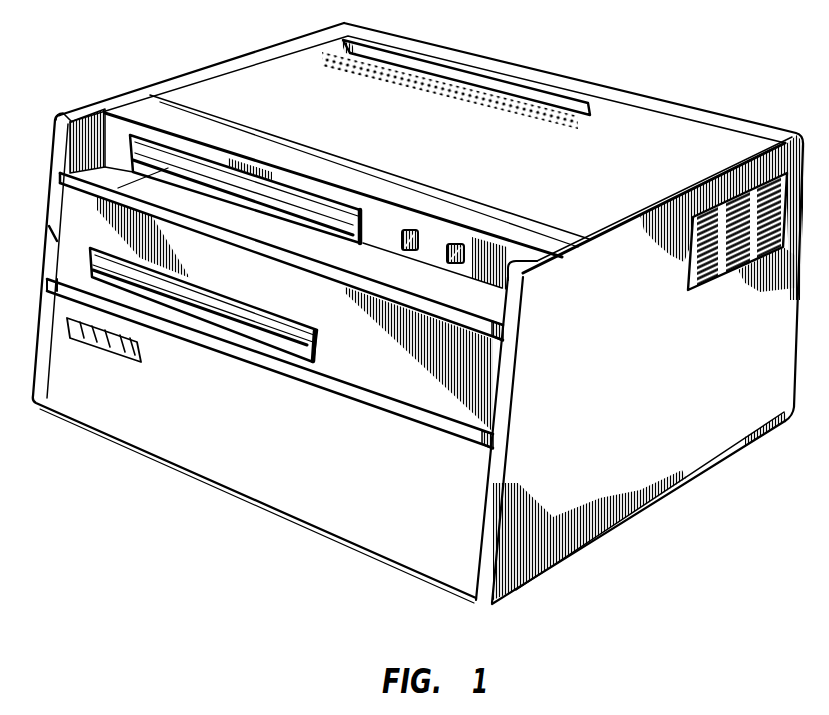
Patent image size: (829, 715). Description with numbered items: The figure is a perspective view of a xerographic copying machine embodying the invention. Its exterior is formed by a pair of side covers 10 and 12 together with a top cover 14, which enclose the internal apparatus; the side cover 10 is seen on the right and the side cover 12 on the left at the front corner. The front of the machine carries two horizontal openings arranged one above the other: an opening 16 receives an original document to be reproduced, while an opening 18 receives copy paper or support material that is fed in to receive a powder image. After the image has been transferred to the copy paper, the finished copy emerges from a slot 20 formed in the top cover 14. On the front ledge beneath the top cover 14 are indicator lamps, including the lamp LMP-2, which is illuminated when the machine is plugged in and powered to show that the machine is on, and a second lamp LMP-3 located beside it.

The side cover 10 is at (500, 366).
The side cover 12 is at (83, 105).
The top cover 14 is at (248, 64).
The opening 16 is at (261, 351).
The opening 18 is at (311, 238).
The slot 20 is at (512, 90).
The lamp LMP-2 is at (412, 230).
The indicator lamp LMP-3 is at (458, 244).